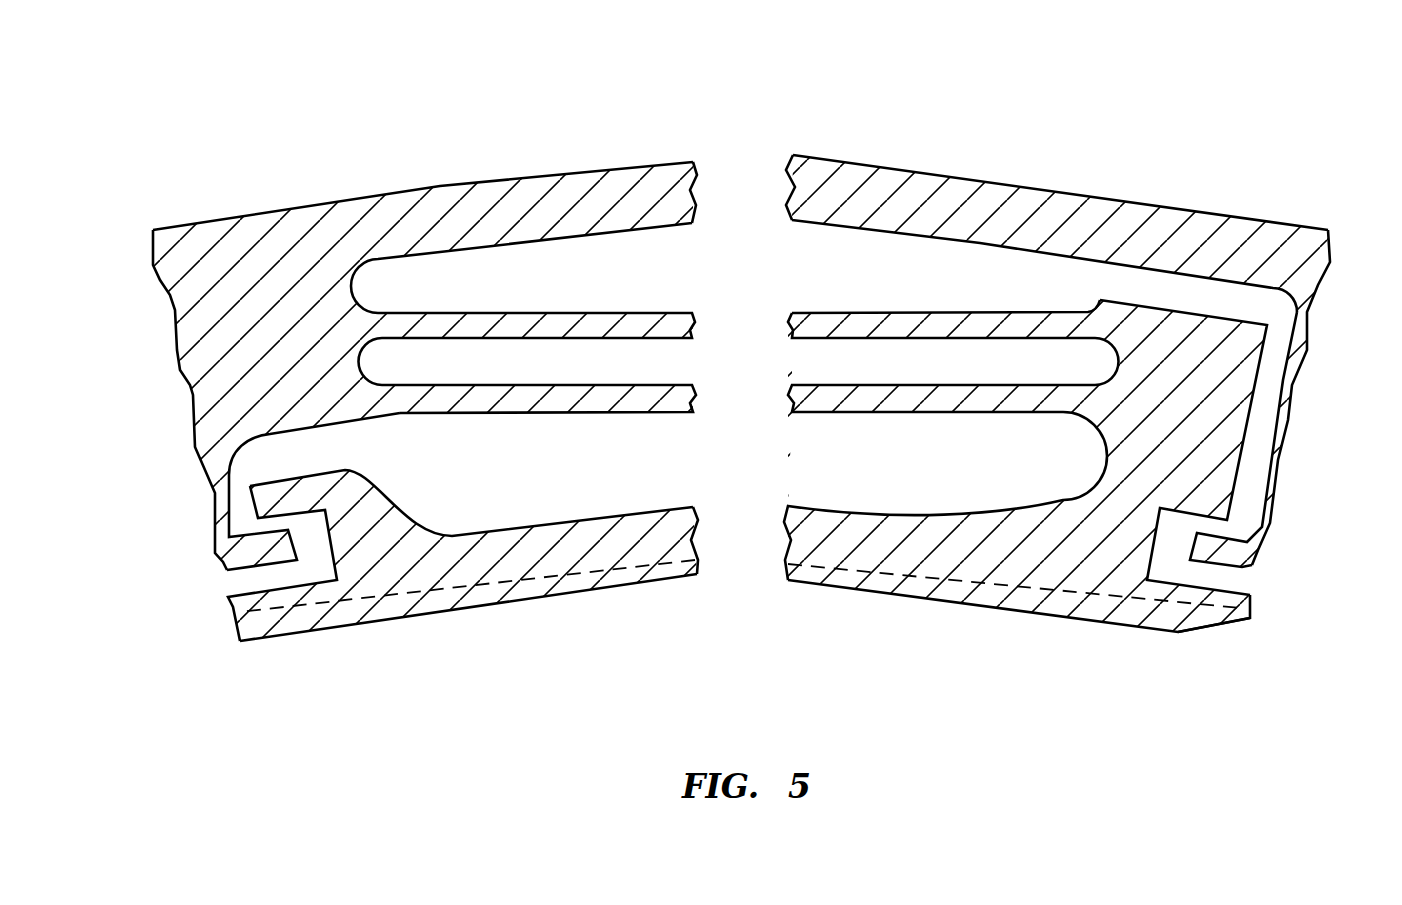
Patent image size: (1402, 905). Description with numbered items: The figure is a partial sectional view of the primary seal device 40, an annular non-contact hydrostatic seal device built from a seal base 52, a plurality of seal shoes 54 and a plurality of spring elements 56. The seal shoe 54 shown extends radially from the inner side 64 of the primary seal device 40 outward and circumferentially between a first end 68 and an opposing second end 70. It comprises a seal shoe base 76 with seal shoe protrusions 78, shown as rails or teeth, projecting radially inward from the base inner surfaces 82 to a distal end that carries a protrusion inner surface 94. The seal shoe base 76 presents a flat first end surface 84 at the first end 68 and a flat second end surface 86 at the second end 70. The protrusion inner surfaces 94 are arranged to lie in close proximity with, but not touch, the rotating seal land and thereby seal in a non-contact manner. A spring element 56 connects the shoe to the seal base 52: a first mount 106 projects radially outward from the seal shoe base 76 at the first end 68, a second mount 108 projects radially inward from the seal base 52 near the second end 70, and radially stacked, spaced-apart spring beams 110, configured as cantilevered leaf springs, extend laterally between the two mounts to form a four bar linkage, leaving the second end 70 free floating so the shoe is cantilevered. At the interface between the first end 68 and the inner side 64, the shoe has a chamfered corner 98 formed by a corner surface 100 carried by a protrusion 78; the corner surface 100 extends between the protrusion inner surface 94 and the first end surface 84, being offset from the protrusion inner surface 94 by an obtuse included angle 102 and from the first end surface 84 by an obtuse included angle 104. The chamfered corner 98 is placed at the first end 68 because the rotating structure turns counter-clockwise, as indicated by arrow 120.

The primary seal device 40 is at (732, 401).
The seal base 52 is at (624, 160).
The seal shoe 54 is at (584, 595).
The spring element 56 is at (584, 306).
The inner side 64 is at (527, 604).
The seal shoe first end 68 is at (1280, 632).
The seal shoe second end 70 is at (230, 598).
The seal shoe base 76 is at (455, 534).
The seal shoe protrusion 78 is at (472, 612).
The base inner surface 82 is at (347, 603).
The first end surface 84 is at (1258, 612).
The second end surface 86 is at (251, 533).
The protrusion inner surface 94 is at (640, 585).
The chamfered corner 98 is at (1232, 647).
The corner surface 100 is at (1154, 621).
The angle 102 is at (1199, 655).
The angle 104 is at (1255, 579).
The first mount 106 is at (1205, 418).
The second mount 108 is at (185, 372).
The spring beam 110 is at (673, 338).
The arrow 120 is at (880, 688).